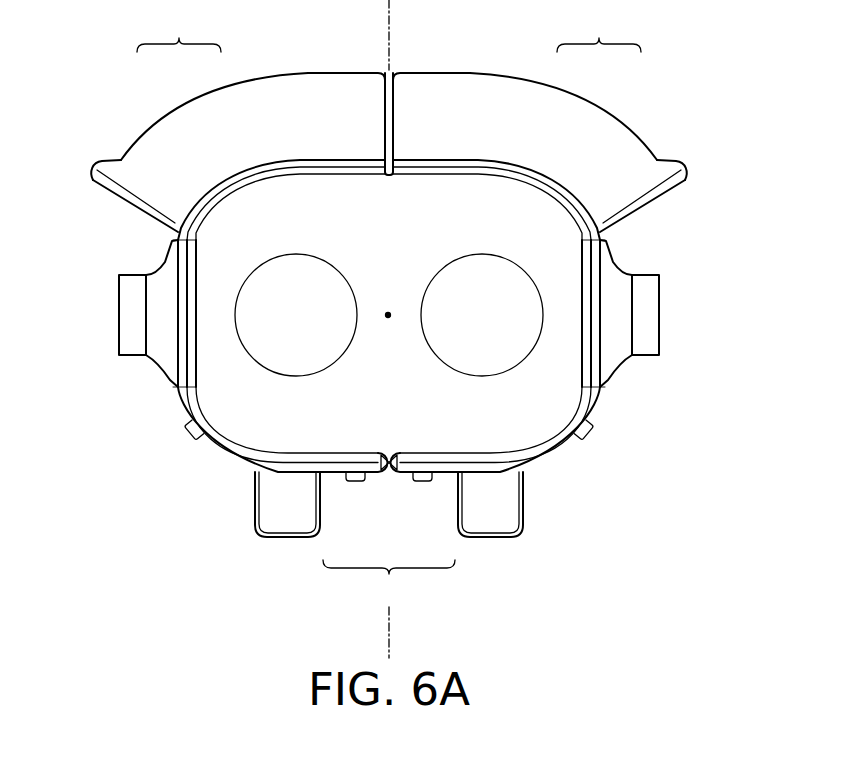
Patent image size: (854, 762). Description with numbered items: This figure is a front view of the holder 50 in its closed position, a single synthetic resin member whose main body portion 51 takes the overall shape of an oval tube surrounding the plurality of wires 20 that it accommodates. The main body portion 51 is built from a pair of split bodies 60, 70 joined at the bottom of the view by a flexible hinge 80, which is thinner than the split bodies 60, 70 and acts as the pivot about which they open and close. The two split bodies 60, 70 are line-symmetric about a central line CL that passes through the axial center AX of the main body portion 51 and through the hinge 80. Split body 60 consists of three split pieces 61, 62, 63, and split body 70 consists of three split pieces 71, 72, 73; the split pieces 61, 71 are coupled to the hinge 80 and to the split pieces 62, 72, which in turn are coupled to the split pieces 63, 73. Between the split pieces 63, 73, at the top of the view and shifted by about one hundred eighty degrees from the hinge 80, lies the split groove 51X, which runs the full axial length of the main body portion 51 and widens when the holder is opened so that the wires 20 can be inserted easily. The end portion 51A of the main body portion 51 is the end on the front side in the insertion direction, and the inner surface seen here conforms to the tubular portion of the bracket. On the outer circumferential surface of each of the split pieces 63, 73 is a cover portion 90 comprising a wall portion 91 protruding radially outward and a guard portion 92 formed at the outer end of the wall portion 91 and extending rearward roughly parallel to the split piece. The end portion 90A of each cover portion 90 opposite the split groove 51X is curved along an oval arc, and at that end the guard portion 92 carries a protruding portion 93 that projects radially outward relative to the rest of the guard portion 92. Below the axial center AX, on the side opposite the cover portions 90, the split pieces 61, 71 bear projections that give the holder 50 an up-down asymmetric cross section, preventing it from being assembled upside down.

The wires 20 is at (488, 254).
The holder 50 is at (678, 62).
The main body portion 51 is at (392, 338).
The end portion 51A is at (540, 464).
The split groove 51X is at (394, 178).
The split body 60 is at (211, 353).
The split piece 61 is at (283, 462).
The split piece 62 is at (115, 321).
The split piece 63 is at (213, 197).
The split body 70 is at (570, 353).
The split piece 71 is at (512, 462).
The split piece 72 is at (665, 321).
The split piece 73 is at (565, 197).
The hinge 80 is at (382, 474).
The cover portion 90 is at (389, 121).
The end portion 90A is at (645, 186).
The wall portion 91 is at (389, 141).
The guard portion 92 is at (618, 117).
The protruding portion 93 is at (683, 165).
The axial center AX is at (387, 322).
The central line CL is at (395, 8).